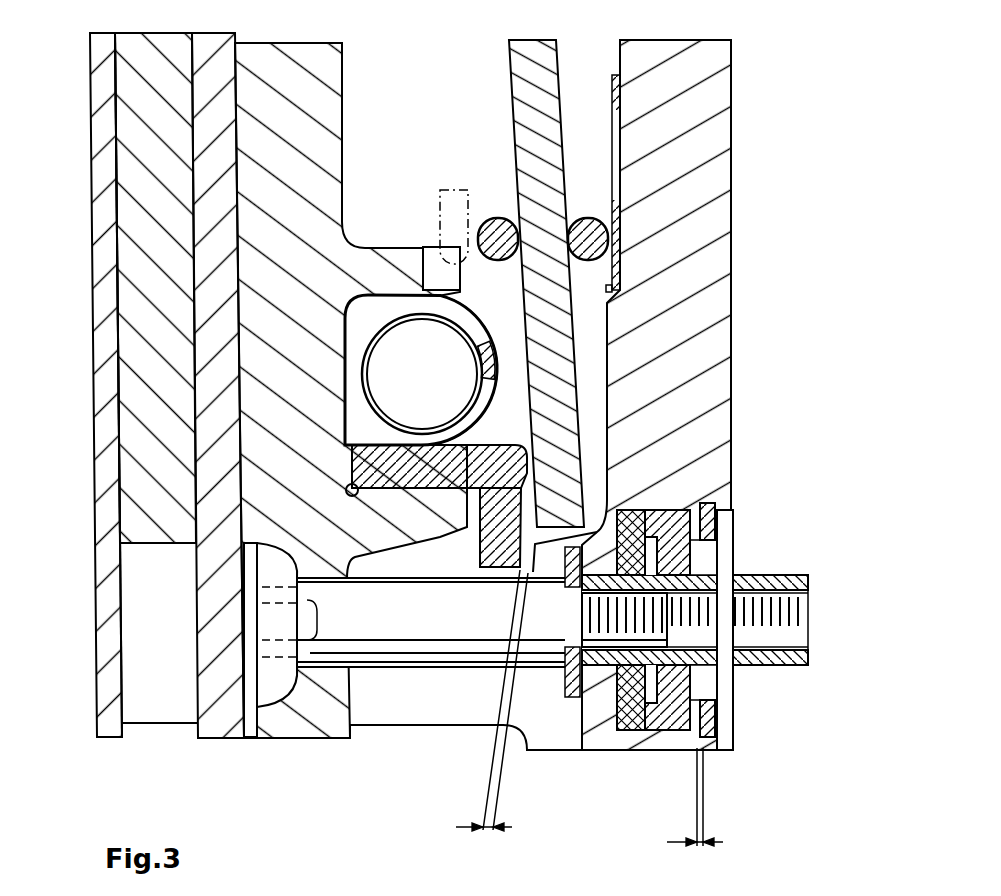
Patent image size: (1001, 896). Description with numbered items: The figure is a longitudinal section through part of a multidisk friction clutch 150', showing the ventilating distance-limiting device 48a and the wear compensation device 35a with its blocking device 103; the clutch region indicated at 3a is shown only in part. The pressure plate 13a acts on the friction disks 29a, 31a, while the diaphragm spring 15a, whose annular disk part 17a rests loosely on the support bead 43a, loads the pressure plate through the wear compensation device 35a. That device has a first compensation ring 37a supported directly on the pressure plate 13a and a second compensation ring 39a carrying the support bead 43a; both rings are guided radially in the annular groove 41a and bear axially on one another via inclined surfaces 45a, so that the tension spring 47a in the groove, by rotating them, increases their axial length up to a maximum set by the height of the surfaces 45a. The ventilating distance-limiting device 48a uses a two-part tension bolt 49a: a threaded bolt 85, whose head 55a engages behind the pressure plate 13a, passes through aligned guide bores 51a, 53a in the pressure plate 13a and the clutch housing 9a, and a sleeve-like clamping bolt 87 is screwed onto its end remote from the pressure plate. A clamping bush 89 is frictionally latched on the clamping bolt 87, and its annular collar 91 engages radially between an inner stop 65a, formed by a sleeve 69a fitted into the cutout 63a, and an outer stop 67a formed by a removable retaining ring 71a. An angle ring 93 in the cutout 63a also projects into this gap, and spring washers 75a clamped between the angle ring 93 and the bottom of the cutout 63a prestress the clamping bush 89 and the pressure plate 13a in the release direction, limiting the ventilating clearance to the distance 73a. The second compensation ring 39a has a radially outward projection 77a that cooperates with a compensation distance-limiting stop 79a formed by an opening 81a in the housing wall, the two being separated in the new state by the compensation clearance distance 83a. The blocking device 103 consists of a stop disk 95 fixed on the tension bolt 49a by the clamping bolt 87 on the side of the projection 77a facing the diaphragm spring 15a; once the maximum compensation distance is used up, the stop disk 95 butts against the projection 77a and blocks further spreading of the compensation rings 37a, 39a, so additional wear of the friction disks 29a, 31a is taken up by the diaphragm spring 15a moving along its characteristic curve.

The brake actuator 3a is at (714, 762).
The clutch housing 9a is at (724, 303).
The pressure plate 13a is at (316, 45).
The diaphragm spring 15a is at (498, 97).
The annular disk part 17a is at (562, 366).
The friction disk 29a is at (108, 737).
The friction disk 31a is at (140, 503).
The wear compensation device 35a is at (409, 237).
The first compensation ring 37a is at (350, 462).
The second compensation ring 39a is at (496, 446).
The annular groove 41a is at (350, 420).
The support bead 43a is at (577, 405).
The inclined surfaces 45a is at (419, 446).
The tension spring 47a is at (464, 322).
The ventilating distance-limiting device 48a is at (748, 548).
The tension bolt 49a is at (435, 668).
The guide bore 51a is at (320, 665).
The guide bore 53a is at (597, 650).
The head 55a is at (254, 740).
The cutout 63a is at (740, 518).
The inner ventilating distance-limiting stop 65a is at (656, 512).
The outer ventilating distance-limiting stop 67a is at (704, 504).
The sleeve 69a is at (641, 510).
The retaining ring 71a is at (737, 556).
The ventilating clearance distance 73a is at (705, 850).
The spring washers 75a is at (637, 733).
The projection 77a is at (492, 549).
The compensation distance-limiting stop 79a is at (505, 565).
The opening 81a is at (371, 703).
The compensation clearance distance 83a is at (482, 835).
The threaded bolt 85 is at (496, 827).
The clamping bolt 87 is at (808, 668).
The clamping bush 89 is at (717, 698).
The annular collar 91 is at (684, 737).
The angle ring 93 is at (657, 732).
The stop disk 95 is at (577, 716).
The blocking device 103 is at (600, 668).
The friction clutch 150' is at (728, 102).